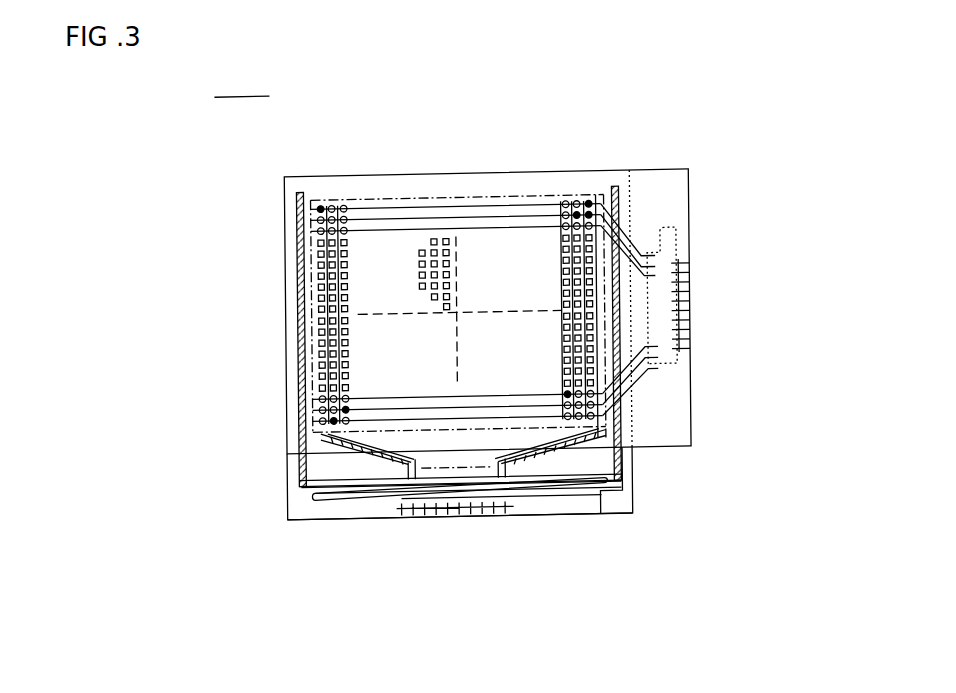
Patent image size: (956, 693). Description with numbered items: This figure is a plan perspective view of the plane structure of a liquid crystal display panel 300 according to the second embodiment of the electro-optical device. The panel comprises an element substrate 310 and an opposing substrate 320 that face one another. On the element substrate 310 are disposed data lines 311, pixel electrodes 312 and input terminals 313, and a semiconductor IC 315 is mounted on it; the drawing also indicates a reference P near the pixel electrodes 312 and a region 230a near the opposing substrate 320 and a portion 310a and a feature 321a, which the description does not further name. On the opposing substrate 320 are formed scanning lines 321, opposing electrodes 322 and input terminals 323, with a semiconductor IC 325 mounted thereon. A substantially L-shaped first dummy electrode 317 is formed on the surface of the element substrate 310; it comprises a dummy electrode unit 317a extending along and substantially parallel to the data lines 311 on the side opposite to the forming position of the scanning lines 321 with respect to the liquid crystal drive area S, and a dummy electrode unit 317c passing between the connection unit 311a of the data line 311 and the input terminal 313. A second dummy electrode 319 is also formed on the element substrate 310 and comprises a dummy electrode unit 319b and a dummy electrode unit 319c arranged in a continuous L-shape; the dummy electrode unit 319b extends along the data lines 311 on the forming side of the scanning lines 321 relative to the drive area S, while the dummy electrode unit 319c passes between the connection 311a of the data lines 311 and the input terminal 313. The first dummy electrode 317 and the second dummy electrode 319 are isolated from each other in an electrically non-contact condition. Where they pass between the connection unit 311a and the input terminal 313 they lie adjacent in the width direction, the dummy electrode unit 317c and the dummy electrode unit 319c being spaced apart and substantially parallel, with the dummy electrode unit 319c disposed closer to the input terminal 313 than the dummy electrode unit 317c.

The liquid crystal display panel 300 is at (241, 81).
The opposing substrate 320 is at (540, 172).
The case opening portion 230a is at (650, 183).
The element substrate 310 is at (283, 436).
The liquid crystal drive area S is at (374, 195).
The opposing electrodes 322 is at (433, 196).
The data lines 311 is at (314, 309).
The dummy electrode unit 317a is at (303, 356).
The pixel electrodes 312 is at (316, 245).
The scanning lines 321 is at (628, 386).
The dummy electrode unit 319b is at (619, 286).
The wiring 321a is at (658, 375).
The semiconductor IC 325 is at (677, 231).
The input terminals 323 is at (689, 296).
The pixel region P is at (420, 252).
The first dummy electrode 317 is at (297, 466).
The dummy electrode unit 317c is at (406, 499).
The second dummy electrode 319 is at (627, 471).
The connection unit 311a is at (379, 490).
The semiconductor IC 315 is at (512, 501).
The input terminals 313 is at (443, 517).
The protruding portion 310a is at (568, 515).
The dummy electrode unit 319c is at (598, 517).